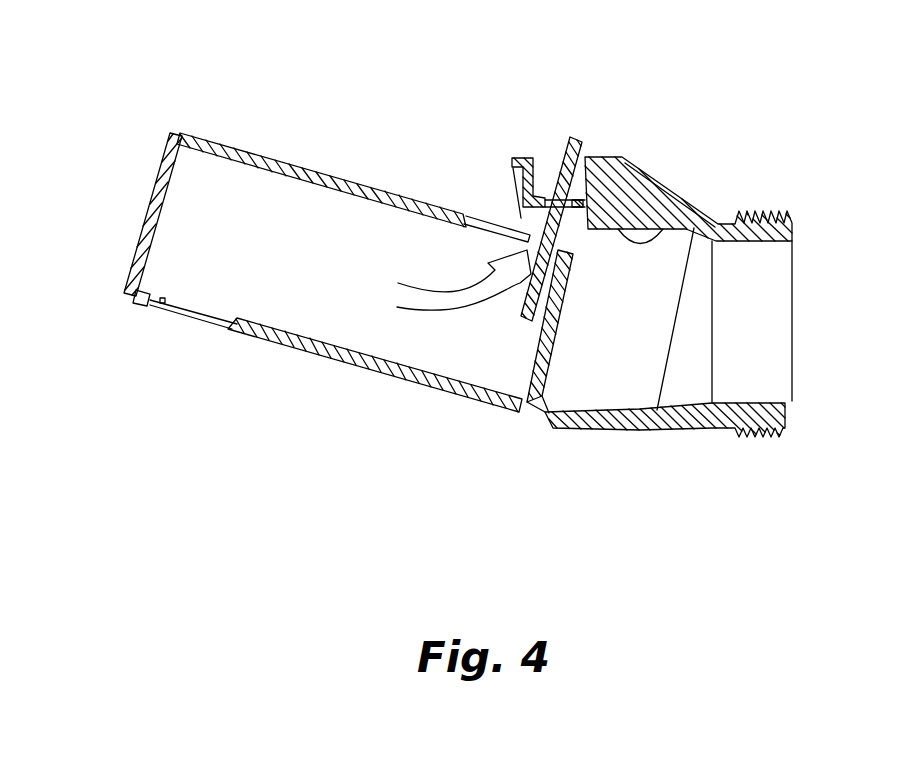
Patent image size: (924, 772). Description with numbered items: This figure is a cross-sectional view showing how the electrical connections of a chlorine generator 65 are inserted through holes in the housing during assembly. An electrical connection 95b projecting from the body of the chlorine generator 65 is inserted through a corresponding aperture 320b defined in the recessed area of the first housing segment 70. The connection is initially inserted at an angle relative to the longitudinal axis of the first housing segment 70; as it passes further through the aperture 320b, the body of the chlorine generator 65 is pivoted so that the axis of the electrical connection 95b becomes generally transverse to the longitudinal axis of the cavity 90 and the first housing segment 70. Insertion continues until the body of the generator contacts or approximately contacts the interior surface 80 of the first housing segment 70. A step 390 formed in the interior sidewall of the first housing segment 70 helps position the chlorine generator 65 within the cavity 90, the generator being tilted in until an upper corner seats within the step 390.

The chlorine generator 65 is at (315, 353).
The cavity 90 is at (470, 214).
The aperture 320b is at (543, 158).
The electrical connection 95b is at (576, 137).
The first housing segment 70 is at (630, 165).
The interior surface 80 is at (663, 220).
The step 390 is at (578, 207).